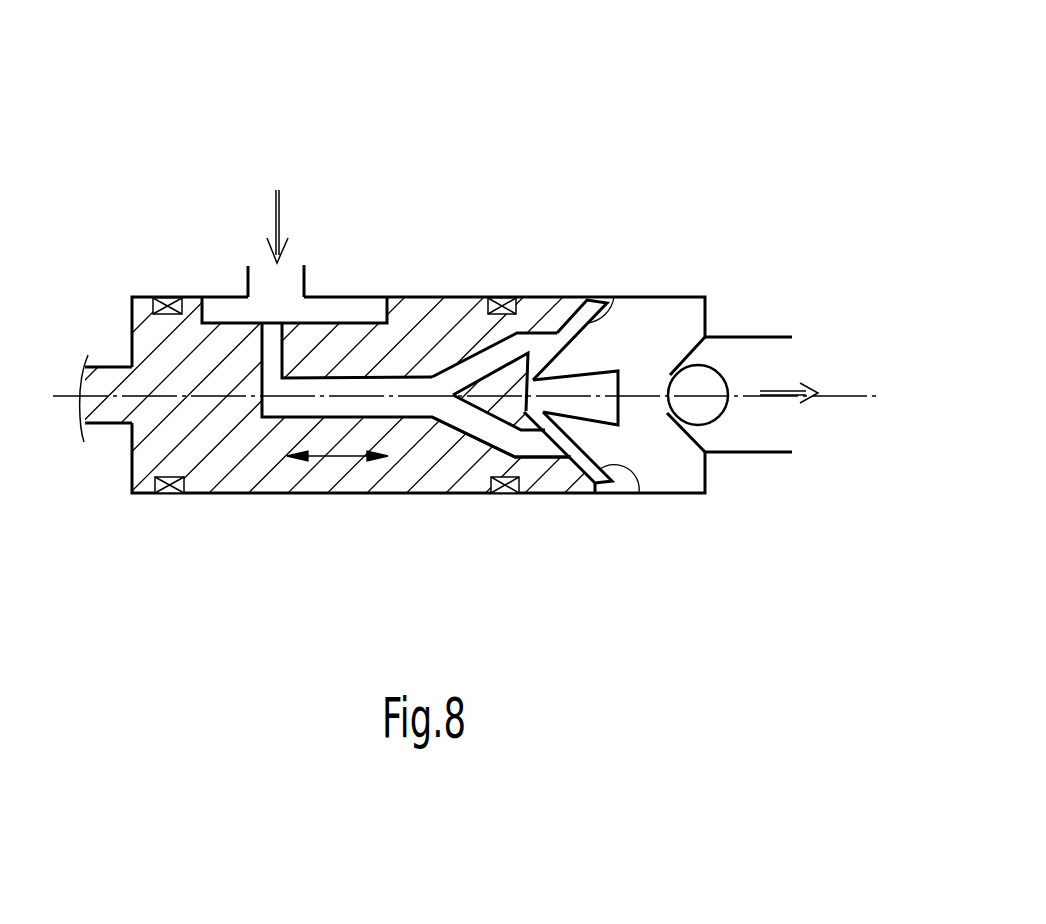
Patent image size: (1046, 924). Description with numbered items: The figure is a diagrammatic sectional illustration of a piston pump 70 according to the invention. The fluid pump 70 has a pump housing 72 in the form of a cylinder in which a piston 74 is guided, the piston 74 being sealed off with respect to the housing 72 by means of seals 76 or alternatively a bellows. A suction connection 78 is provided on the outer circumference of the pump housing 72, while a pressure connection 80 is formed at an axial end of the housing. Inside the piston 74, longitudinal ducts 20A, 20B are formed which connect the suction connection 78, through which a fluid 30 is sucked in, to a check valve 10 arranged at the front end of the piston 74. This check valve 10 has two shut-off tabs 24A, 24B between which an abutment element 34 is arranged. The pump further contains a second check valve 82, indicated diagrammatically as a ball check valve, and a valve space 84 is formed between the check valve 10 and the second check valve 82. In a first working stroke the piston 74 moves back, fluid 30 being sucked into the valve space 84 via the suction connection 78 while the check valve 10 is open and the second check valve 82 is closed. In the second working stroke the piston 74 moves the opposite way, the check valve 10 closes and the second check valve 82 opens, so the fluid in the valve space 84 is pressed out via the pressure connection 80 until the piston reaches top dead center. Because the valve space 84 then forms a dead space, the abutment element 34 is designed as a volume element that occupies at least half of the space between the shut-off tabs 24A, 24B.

The check valve 10 is at (568, 273).
The longitudinal duct 20A is at (483, 367).
The longitudinal duct 20B is at (473, 420).
The shut-off tab 24A is at (622, 297).
The shut-off tab 24B is at (637, 480).
The fluid 30 is at (283, 217).
The abutment element 34 is at (605, 405).
The piston pump 70 is at (668, 197).
The pump housing 72 is at (637, 293).
The piston 74 is at (325, 475).
The seals 76 is at (167, 298).
The suction connection 78 is at (248, 273).
The pressure connection 80 is at (762, 336).
The second check valve 82 is at (723, 463).
The valve space 84 is at (697, 293).